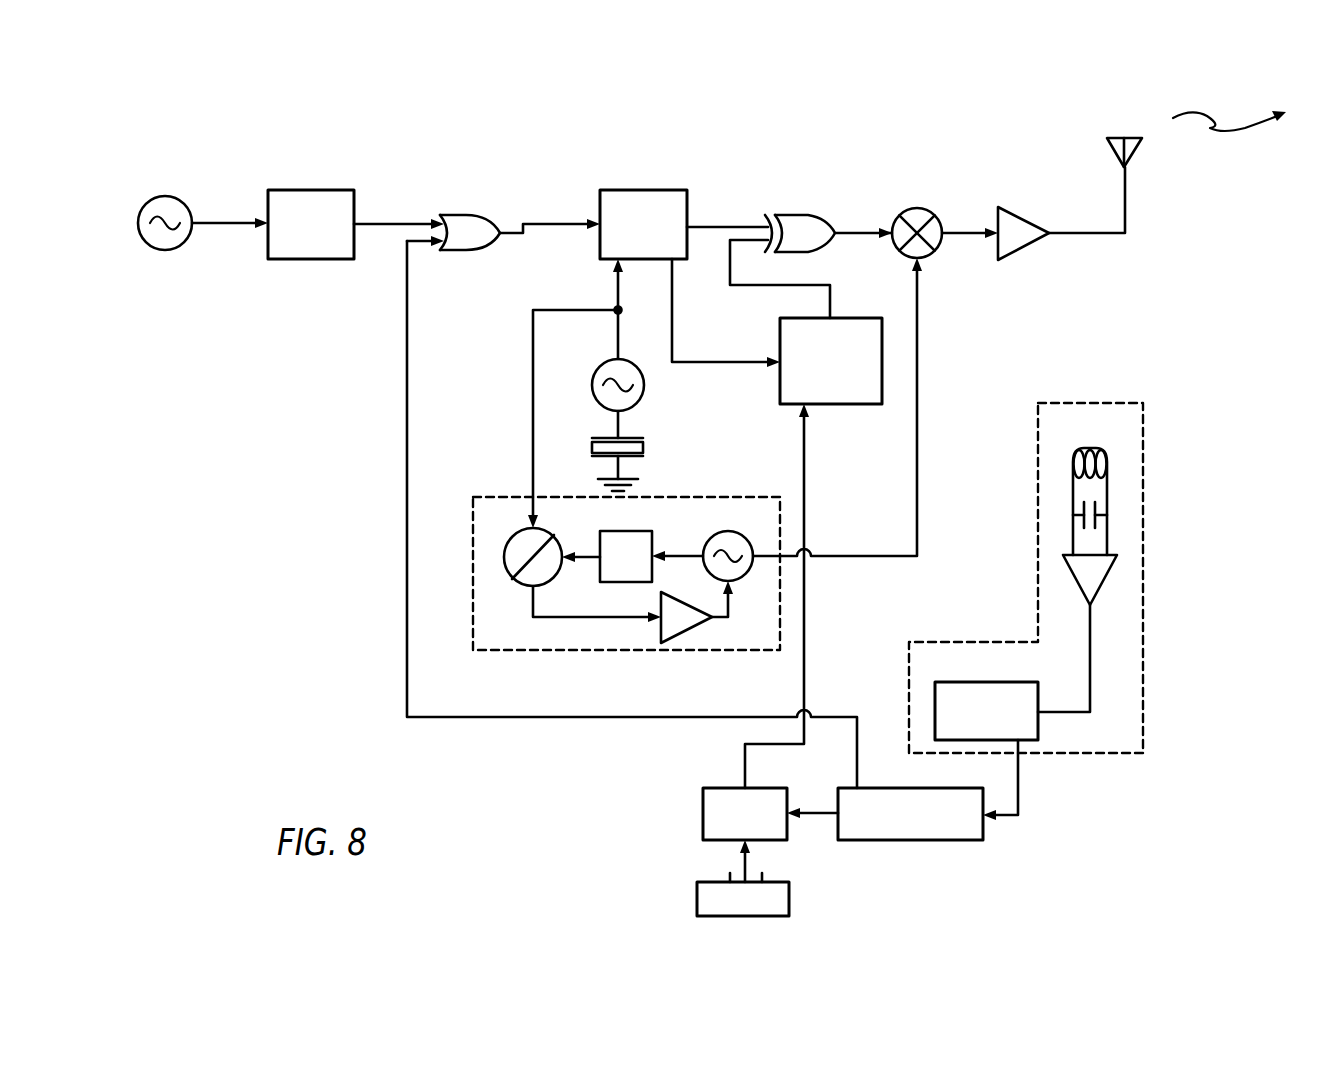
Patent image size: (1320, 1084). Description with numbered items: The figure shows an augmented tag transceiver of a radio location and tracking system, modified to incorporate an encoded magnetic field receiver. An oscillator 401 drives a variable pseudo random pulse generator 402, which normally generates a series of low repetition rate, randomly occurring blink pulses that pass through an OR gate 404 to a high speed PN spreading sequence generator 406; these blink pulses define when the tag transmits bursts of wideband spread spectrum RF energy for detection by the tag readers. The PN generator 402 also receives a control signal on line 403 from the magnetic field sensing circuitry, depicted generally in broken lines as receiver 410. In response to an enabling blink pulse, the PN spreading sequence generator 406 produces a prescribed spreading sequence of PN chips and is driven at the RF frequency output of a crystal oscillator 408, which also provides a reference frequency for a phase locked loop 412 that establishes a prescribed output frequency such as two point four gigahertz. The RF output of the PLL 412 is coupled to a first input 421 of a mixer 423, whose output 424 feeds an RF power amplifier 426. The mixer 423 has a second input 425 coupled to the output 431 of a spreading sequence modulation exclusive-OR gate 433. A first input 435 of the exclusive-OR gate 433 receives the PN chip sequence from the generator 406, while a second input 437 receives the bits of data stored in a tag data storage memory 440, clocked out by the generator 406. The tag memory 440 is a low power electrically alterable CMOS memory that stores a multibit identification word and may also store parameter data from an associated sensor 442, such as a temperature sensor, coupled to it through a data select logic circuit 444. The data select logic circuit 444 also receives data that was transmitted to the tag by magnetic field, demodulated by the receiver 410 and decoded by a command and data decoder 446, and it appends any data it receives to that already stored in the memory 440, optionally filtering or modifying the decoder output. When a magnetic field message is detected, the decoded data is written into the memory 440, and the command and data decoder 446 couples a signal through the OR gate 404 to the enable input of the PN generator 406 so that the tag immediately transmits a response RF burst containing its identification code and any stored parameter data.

The oscillator 401 is at (165, 196).
The variable pseudo random (PN) pulse generator 402 is at (354, 215).
The control signal line 403 is at (453, 717).
The OR gate 404 is at (457, 215).
The high speed PN spreading sequence generator 406 is at (652, 188).
The crystal oscillator 408 is at (644, 393).
The magnetic field sensing circuit 410 is at (994, 641).
The phase locked loop (PLL) 412 is at (473, 617).
The first input of mixer 421 is at (920, 258).
The mixer 423 is at (904, 212).
The output of mixer 424 is at (946, 232).
The second input of mixer 425 is at (895, 223).
The RF power amplifier 426 is at (1030, 223).
The output of exclusive-OR gate 431 is at (838, 227).
The spreading sequence modulation exclusive-OR gate 433 is at (795, 215).
The first input of exclusive-OR gate 435 is at (768, 225).
The second input of exclusive-OR gate 437 is at (730, 240).
The tag data storage memory 440 is at (848, 318).
The sensor 442 is at (697, 900).
The data select logic circuit 444 is at (703, 811).
The command and data decoder 446 is at (930, 840).